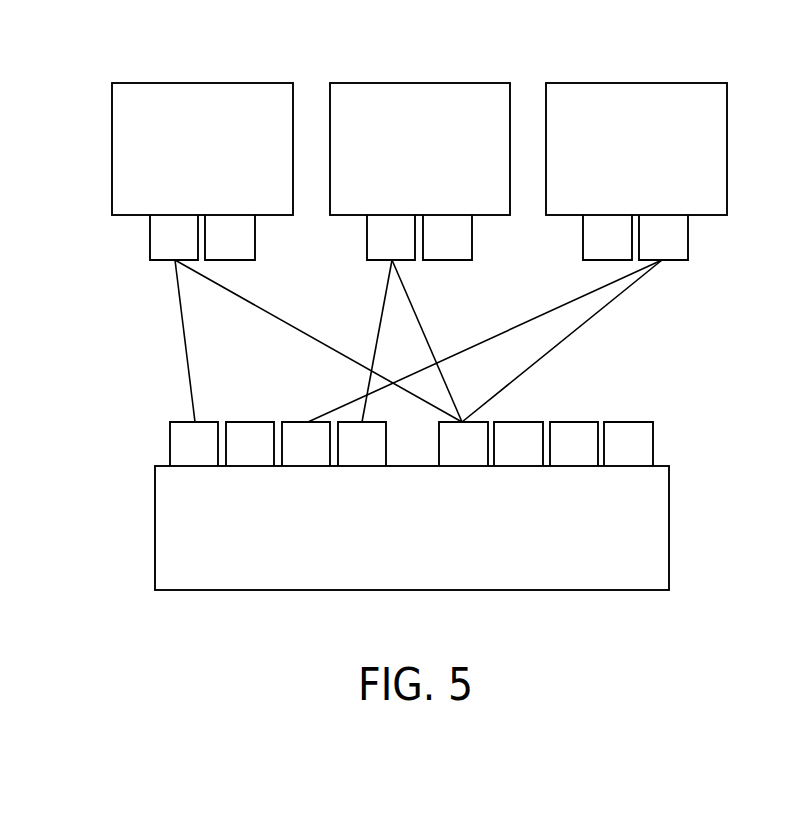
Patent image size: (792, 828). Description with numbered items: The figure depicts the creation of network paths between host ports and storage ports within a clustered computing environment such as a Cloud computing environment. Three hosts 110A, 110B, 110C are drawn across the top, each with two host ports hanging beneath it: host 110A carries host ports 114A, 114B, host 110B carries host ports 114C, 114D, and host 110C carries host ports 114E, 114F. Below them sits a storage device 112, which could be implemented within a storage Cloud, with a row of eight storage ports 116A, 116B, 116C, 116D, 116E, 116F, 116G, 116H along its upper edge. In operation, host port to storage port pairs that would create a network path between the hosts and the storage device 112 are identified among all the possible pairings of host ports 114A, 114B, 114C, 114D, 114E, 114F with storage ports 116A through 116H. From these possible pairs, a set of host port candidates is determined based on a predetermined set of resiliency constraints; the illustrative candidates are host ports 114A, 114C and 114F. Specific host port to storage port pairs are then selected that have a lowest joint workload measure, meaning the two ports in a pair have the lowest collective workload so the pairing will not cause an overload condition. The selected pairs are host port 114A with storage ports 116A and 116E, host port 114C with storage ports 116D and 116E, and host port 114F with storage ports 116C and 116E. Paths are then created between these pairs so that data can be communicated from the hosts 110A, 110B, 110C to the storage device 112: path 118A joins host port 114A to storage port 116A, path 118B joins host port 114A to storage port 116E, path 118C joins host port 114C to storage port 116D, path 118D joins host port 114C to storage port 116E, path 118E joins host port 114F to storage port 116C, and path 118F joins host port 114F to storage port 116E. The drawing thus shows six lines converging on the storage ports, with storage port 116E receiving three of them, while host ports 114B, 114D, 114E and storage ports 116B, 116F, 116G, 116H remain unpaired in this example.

The host 110A is at (203, 83).
The host 110B is at (418, 83).
The host 110C is at (636, 83).
The storage device 112 is at (670, 523).
The host port 114A is at (153, 243).
The host port 114B is at (253, 247).
The host port 114C is at (370, 249).
The host port 114D is at (470, 247).
The host port 114E is at (588, 249).
The host port 114F is at (688, 241).
The storage port 116A is at (195, 463).
The storage port 116B is at (247, 425).
The storage port 116C is at (310, 463).
The storage port 116D is at (358, 463).
The storage port 116E is at (467, 463).
The storage port 116F is at (515, 463).
The storage port 116G is at (575, 426).
The storage port 116H is at (628, 426).
The path 118A is at (184, 340).
The path 118B is at (299, 333).
The path 118C is at (381, 307).
The path 118D is at (410, 297).
The path 118E is at (516, 328).
The path 118F is at (595, 318).